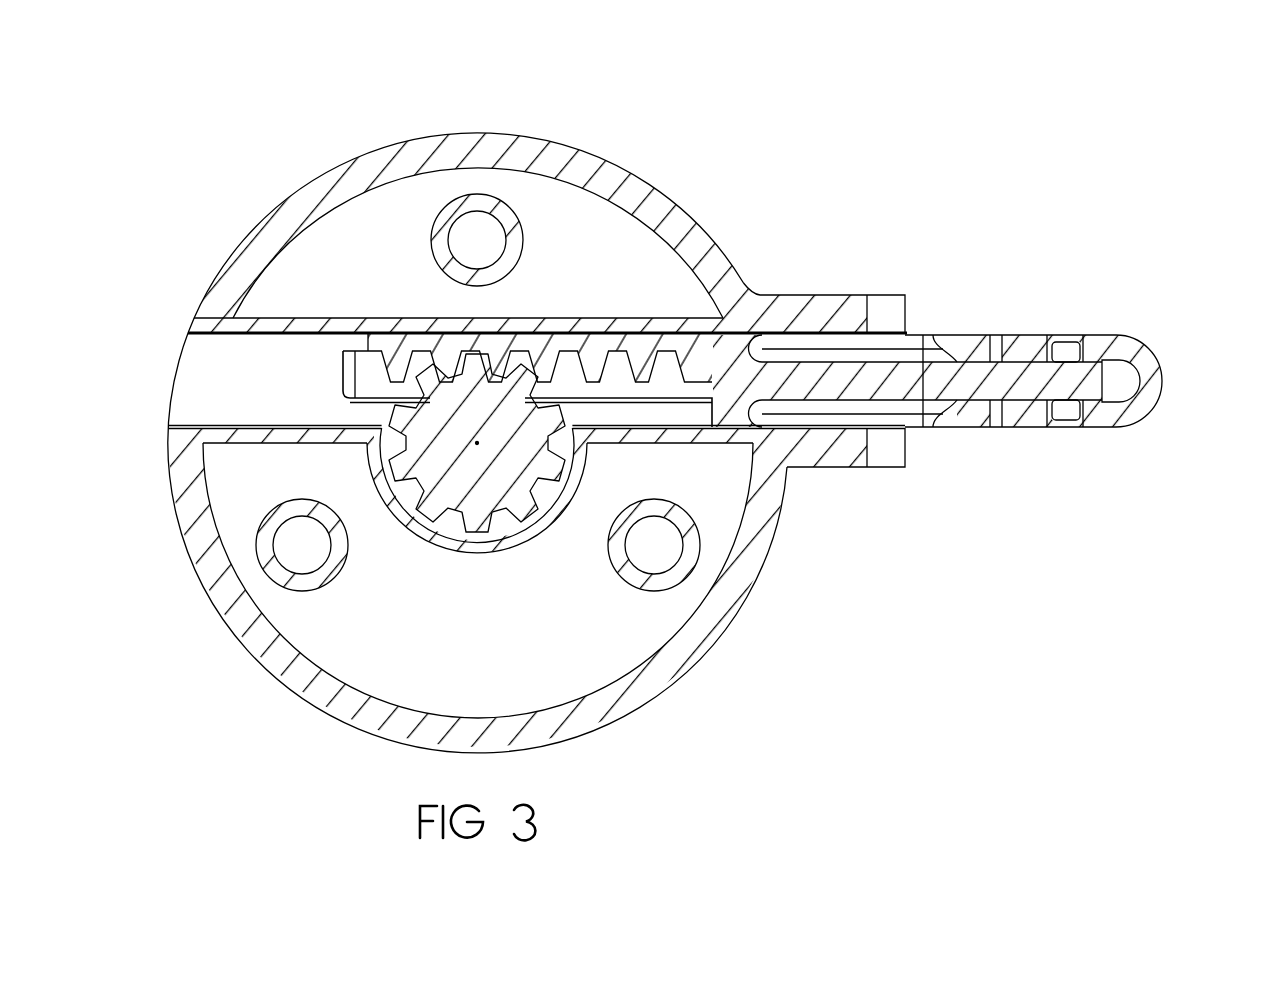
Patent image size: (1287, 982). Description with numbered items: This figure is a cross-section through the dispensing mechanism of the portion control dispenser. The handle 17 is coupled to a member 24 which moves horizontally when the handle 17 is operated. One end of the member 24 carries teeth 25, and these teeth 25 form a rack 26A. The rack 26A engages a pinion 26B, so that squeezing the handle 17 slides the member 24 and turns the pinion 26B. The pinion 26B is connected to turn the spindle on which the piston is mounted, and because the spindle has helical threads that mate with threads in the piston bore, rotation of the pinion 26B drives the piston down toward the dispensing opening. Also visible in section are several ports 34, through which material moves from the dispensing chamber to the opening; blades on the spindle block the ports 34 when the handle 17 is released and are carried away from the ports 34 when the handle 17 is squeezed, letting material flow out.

The handle 17 is at (997, 386).
The member 24 is at (890, 382).
The teeth 25 is at (635, 365).
The rack 26A is at (587, 234).
The pinion 26B is at (467, 477).
The ports 34 is at (477, 240).